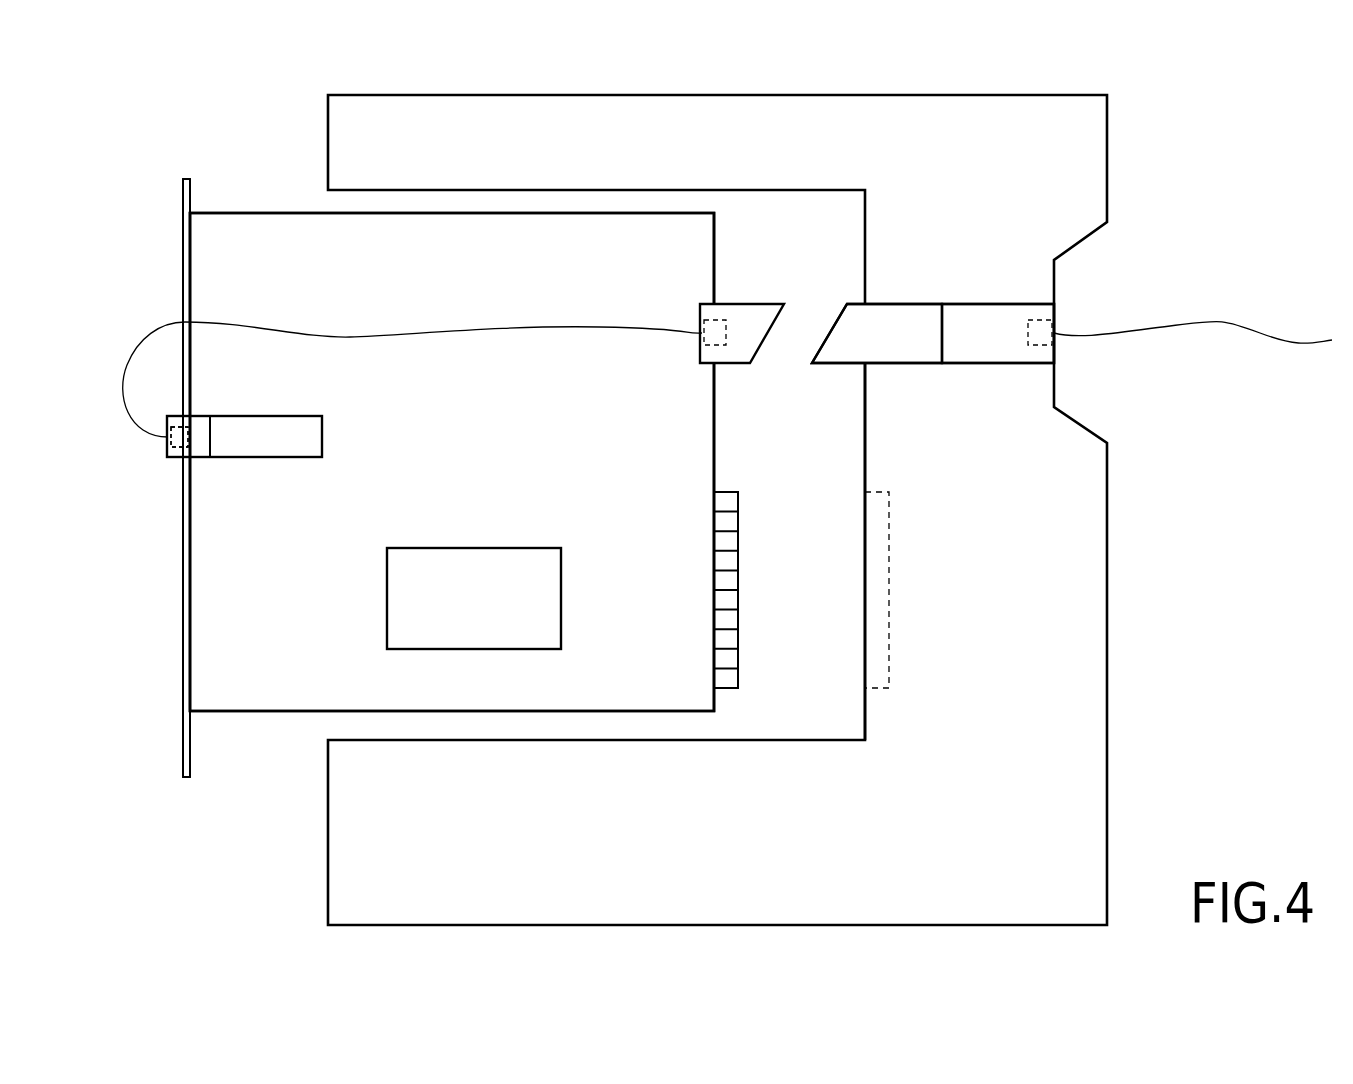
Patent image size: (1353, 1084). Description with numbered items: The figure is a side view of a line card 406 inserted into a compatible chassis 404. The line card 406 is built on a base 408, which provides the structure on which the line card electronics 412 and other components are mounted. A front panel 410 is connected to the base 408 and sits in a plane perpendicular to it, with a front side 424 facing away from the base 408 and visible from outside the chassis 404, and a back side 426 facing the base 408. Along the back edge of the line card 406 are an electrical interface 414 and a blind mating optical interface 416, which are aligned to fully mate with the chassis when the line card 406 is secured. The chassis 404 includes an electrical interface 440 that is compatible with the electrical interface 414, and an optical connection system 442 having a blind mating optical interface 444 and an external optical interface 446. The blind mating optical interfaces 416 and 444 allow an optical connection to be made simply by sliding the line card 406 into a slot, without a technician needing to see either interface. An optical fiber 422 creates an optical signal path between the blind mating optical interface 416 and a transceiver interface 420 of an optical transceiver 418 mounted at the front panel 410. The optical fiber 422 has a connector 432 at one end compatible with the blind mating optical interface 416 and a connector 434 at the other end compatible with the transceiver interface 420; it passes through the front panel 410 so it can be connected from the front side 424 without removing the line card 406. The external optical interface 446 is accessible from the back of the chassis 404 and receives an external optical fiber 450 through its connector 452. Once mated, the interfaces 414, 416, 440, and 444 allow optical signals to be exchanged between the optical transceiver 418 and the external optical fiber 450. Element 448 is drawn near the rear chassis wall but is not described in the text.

The chassis 404 is at (1107, 120).
The line card 406 is at (127, 622).
The base 408 is at (258, 712).
The front panel 410 is at (183, 275).
The line card electronics 412 is at (561, 595).
The electrical interface 414 is at (727, 492).
The blind mating optical interface 416 is at (752, 305).
The optical transceiver 418 is at (322, 436).
The transceiver interface 420 is at (167, 456).
The optical fiber 422 is at (445, 332).
The front side 424 is at (183, 190).
The back side 426 is at (192, 204).
The connector 432 is at (718, 345).
The connector 434 is at (178, 448).
The electrical interface 440 is at (889, 583).
The optical connection system 442 is at (960, 282).
The blind mating optical interface 444 is at (905, 363).
The external optical interface 446 is at (995, 363).
The chassis rear wall 448 is at (865, 732).
The external optical fiber 450 is at (1215, 325).
The connector 452 is at (1040, 318).